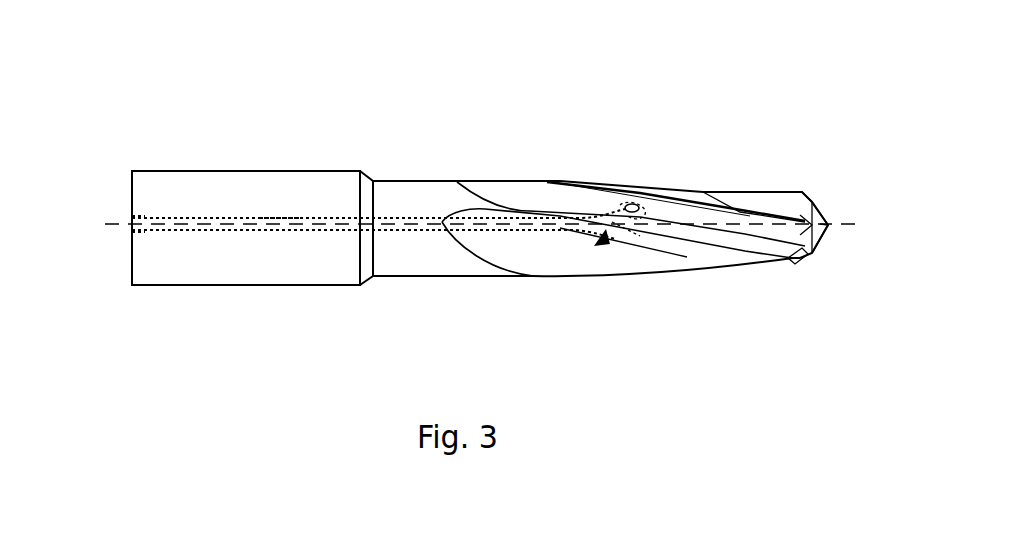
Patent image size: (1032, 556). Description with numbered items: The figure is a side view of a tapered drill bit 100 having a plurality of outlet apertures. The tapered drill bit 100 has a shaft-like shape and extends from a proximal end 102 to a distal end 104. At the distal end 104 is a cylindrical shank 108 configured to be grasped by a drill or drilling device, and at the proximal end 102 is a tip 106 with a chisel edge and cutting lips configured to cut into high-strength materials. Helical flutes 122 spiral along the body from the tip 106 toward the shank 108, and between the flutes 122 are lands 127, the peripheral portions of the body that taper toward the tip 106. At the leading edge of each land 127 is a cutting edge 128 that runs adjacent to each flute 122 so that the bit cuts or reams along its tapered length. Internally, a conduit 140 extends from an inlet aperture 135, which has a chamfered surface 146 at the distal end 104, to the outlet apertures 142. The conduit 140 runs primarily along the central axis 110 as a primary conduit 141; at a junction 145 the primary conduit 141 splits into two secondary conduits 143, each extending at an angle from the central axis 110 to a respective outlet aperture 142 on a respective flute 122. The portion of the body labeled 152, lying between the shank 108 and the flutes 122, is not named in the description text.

The rotary cutting tool (drill) 100 is at (237, 58).
The cutting end 102 is at (846, 262).
The shank end 104 is at (124, 256).
The drill tip 106 is at (820, 207).
The shank 108 is at (200, 192).
The neck 110 is at (328, 223).
The flute 122 is at (530, 200).
The land 127 is at (705, 193).
The margin / cutting edge 128 is at (748, 194).
The coolant inlet 135 is at (133, 213).
The coolant channel 140 is at (258, 242).
The coolant channel wall 141 is at (270, 216).
The coolant outlet 142 is at (636, 195).
The outlet opening 143 is at (612, 200).
The coolant flow direction 145 is at (604, 252).
The channel inlet end 146 is at (134, 216).
The body portion 152 is at (400, 200).